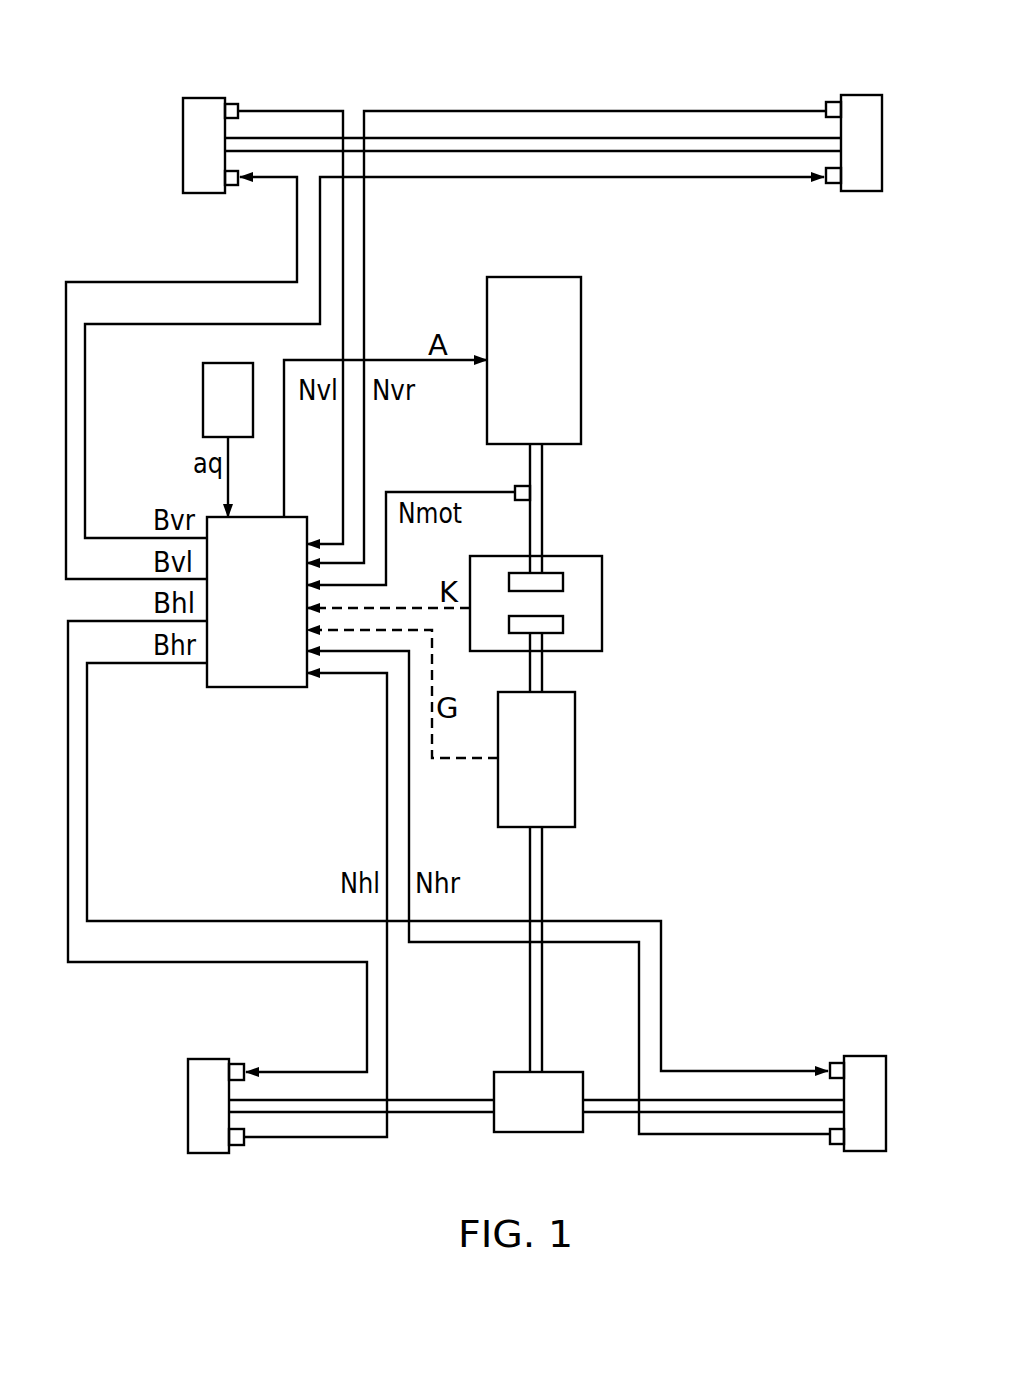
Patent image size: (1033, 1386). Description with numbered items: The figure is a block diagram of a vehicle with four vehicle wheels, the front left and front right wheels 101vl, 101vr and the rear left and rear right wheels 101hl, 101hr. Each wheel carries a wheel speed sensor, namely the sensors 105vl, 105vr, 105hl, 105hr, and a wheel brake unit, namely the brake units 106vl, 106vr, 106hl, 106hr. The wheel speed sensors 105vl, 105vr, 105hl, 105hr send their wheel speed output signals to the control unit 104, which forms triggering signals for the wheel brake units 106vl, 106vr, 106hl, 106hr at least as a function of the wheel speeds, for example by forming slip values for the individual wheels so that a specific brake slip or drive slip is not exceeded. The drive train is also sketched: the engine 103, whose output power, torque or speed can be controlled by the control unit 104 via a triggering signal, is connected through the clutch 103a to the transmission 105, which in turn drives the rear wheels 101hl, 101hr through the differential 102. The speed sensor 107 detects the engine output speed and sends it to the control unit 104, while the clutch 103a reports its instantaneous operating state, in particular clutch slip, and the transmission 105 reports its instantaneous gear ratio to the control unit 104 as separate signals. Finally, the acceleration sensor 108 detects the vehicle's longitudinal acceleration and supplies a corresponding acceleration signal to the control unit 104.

The front left vehicle wheel 101vl is at (197, 106).
The front right vehicle wheel 101vr is at (867, 102).
The rear left vehicle wheel 101hl is at (202, 1147).
The rear right vehicle wheel 101hr is at (872, 1143).
The differential 102 is at (505, 1078).
The engine 103 is at (566, 305).
The clutch 103a is at (583, 595).
The control unit 104 is at (230, 675).
The transmission 105 is at (557, 765).
The front left wheel speed sensor 105vl is at (235, 108).
The front right wheel speed sensor 105vr is at (828, 103).
The rear left wheel speed sensor 105hl is at (239, 1143).
The rear right wheel speed sensor 105hr is at (835, 1143).
The front left wheel brake unit 106vl is at (233, 184).
The front right wheel brake unit 106vr is at (833, 183).
The rear left wheel brake unit 106hl is at (239, 1067).
The rear right wheel brake unit 106hr is at (837, 1064).
The speed sensor 107 is at (520, 487).
The acceleration sensor 108 is at (215, 420).